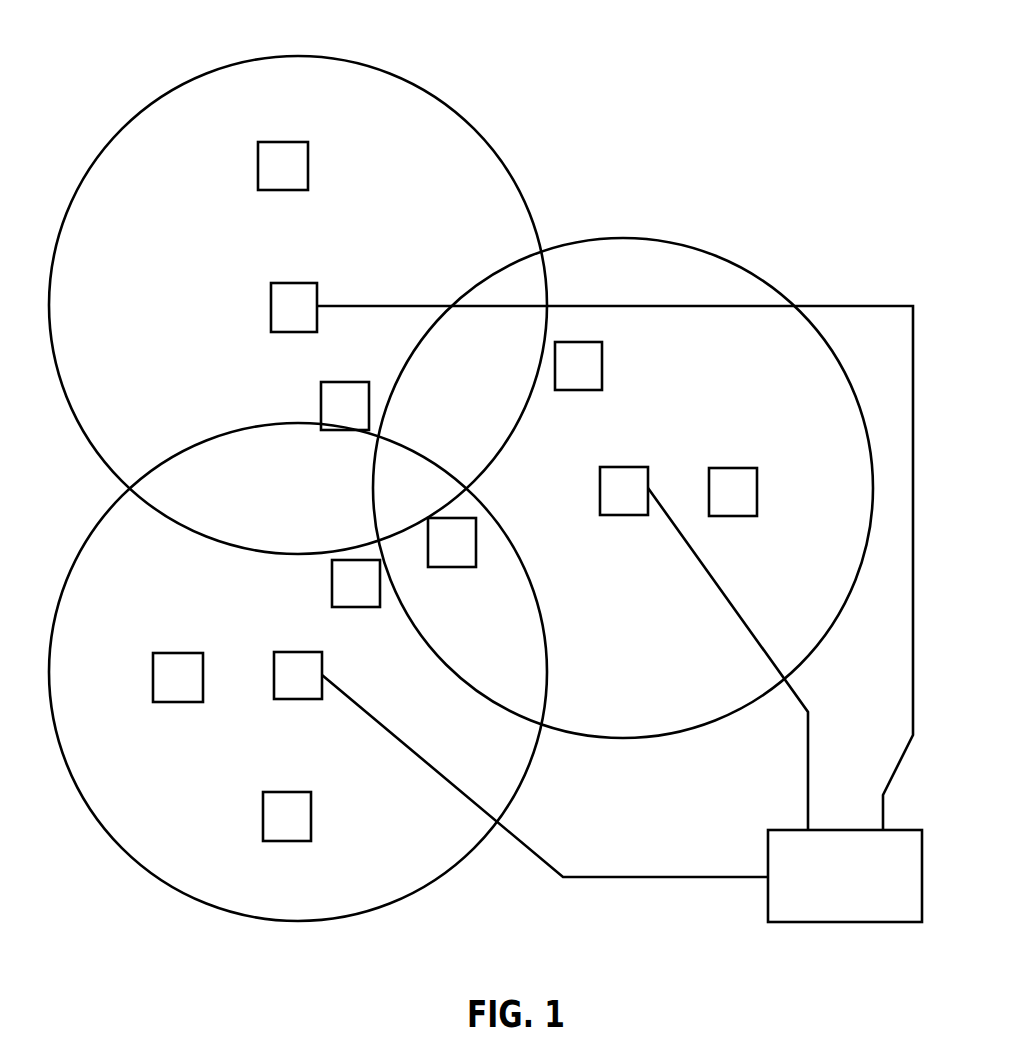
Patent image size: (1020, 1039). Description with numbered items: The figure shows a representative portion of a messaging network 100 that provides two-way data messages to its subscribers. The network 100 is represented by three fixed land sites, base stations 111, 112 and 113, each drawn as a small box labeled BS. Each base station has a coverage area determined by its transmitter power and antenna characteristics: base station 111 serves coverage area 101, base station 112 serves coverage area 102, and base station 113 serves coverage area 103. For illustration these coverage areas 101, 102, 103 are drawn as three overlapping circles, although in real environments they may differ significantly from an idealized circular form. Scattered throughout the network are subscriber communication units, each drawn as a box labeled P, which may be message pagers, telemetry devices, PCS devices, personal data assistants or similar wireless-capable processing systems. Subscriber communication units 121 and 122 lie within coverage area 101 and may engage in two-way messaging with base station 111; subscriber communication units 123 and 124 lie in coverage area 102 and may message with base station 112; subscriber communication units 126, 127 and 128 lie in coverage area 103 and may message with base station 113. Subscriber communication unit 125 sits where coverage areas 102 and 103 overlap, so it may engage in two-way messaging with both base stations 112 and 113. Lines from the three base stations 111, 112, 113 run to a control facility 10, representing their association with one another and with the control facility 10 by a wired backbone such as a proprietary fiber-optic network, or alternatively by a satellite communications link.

The messaging network 100 is at (597, 154).
The coverage area 101 is at (292, 57).
The coverage area 102 is at (626, 738).
The coverage area 103 is at (302, 921).
The base station 111 is at (295, 283).
The base station 112 is at (625, 467).
The base station 113 is at (297, 652).
The subscriber communication unit 121 is at (321, 409).
The subscriber communication unit 122 is at (258, 168).
The subscriber communication unit 123 is at (603, 367).
The subscriber communication unit 124 is at (758, 492).
The subscriber communication unit 125 is at (452, 568).
The subscriber communication unit 126 is at (357, 608).
The subscriber communication unit 127 is at (263, 817).
The subscriber communication unit 128 is at (153, 679).
The control facility 10 is at (845, 923).